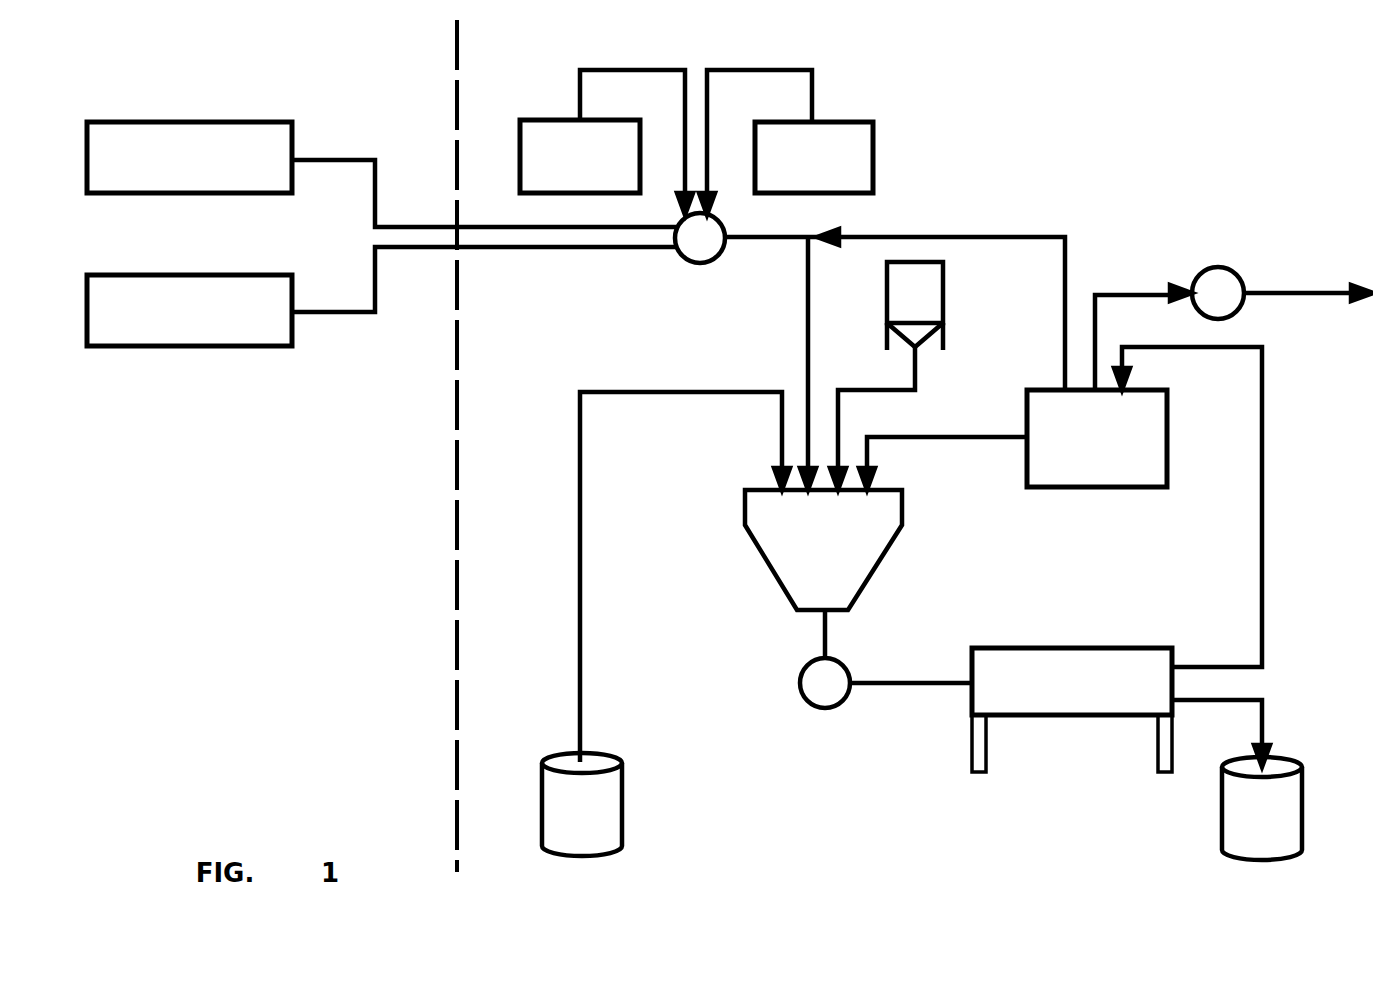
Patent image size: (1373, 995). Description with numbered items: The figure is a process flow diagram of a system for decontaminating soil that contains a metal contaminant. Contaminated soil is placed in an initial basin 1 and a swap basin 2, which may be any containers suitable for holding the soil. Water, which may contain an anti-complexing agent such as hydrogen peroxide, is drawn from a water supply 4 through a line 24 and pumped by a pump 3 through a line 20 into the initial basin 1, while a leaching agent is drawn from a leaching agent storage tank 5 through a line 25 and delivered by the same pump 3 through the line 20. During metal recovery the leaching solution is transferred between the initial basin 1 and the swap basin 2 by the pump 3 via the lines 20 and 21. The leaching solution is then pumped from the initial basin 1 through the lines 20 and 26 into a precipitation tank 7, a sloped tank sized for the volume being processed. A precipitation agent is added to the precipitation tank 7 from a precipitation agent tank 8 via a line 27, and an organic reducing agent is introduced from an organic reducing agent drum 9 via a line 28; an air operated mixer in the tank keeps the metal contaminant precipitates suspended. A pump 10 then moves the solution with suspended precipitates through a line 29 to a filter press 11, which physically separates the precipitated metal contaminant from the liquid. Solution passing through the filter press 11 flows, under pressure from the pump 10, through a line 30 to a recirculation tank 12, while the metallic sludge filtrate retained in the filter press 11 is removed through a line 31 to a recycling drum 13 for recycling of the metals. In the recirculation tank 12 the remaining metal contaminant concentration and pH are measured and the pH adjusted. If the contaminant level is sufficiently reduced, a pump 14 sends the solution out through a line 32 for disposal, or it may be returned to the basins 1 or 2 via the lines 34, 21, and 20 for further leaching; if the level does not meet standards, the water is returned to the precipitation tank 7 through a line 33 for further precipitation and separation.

The initial basin 1 is at (180, 174).
The swap basin 2 is at (180, 327).
The pump 3 is at (691, 255).
The water supply 4 is at (570, 171).
The leaching agent storage tank 5 is at (803, 171).
The precipitation tank 7 is at (865, 560).
The precipitation agent tank 8 is at (906, 309).
The organic reducing agent drum 9 is at (572, 821).
The pump 10 is at (812, 700).
The filter press 11 is at (1060, 699).
The recirculation tank 12 is at (1082, 449).
The recycling drum 13 is at (1248, 825).
The pump 14 is at (1204, 310).
The line 20 is at (375, 198).
The line 21 is at (375, 290).
The line 24 is at (642, 68).
The line 25 is at (752, 68).
The line 26 is at (808, 335).
The line 27 is at (897, 392).
The line 28 is at (582, 582).
The line 29 is at (826, 635).
The line 30 is at (1205, 346).
The line 31 is at (1262, 720).
The line 32 is at (1276, 293).
The line 33 is at (935, 437).
The line 34 is at (980, 237).